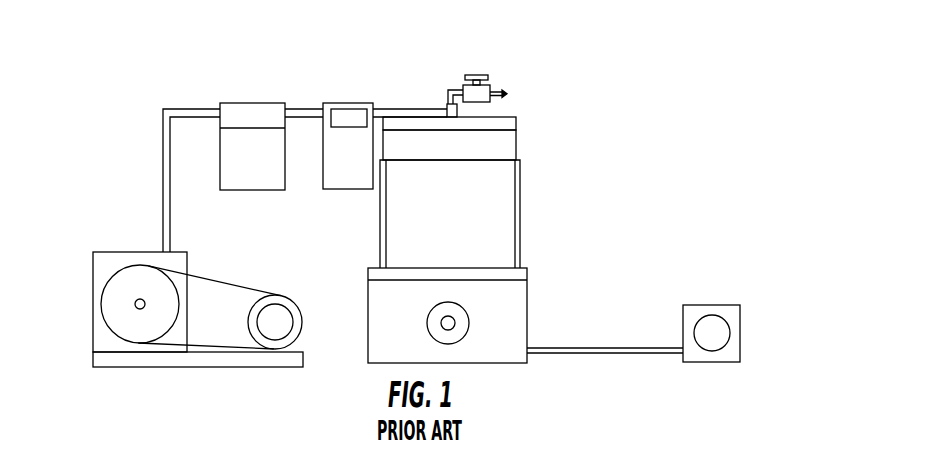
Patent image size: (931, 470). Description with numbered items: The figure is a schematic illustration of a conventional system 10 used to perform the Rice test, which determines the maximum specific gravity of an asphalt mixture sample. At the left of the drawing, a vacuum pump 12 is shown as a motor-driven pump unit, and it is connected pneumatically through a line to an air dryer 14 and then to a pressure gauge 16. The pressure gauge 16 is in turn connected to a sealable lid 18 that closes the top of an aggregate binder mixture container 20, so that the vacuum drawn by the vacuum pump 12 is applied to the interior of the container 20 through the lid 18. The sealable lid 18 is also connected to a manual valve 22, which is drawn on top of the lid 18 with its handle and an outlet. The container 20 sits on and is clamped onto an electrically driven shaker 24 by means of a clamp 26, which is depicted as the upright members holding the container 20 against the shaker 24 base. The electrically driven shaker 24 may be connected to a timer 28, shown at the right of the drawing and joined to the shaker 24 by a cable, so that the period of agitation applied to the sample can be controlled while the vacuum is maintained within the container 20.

The conventional system 10 is at (128, 58).
The vacuum pump 12 is at (137, 252).
The air dryer 14 is at (252, 190).
The pressure gauge 16 is at (350, 102).
The sealable lid 18 is at (503, 117).
The aggregate binder mixture container 20 is at (517, 147).
The manual valve 22 is at (478, 72).
The electrically driven shaker 24 is at (528, 318).
The clamp 26 is at (520, 210).
The timer 28 is at (713, 303).